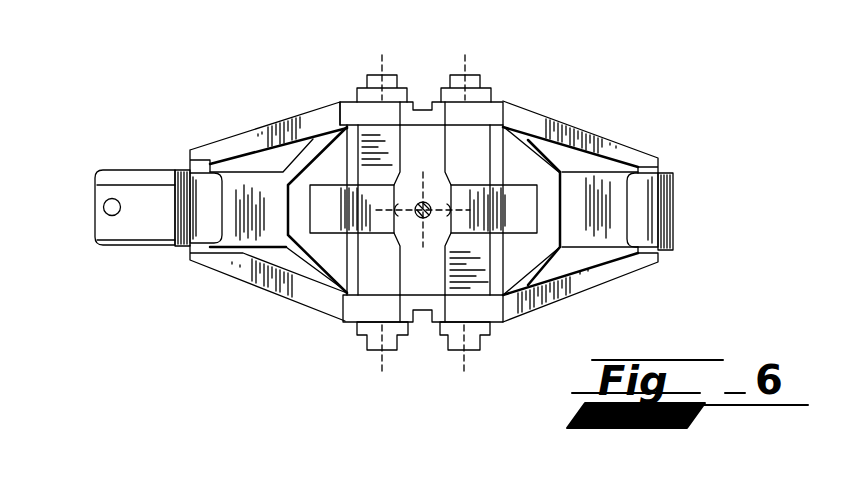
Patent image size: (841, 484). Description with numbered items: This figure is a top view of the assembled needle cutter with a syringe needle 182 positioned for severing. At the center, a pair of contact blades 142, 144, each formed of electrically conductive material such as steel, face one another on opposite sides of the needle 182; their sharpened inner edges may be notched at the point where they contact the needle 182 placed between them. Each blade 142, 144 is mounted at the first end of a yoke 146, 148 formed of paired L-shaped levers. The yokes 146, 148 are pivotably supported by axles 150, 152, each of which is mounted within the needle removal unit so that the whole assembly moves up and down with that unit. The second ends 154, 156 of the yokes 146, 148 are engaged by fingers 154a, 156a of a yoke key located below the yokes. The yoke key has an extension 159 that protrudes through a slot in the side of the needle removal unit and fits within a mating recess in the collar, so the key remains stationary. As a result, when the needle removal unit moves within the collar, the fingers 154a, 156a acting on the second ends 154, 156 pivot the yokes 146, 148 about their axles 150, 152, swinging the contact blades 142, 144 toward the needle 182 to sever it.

The contact blade 142 is at (329, 180).
The contact blade 144 is at (470, 187).
The yoke 146 is at (282, 296).
The yoke 148 is at (578, 293).
The axle 150 is at (370, 353).
The axle 152 is at (470, 352).
The second end of yoke 154 is at (245, 123).
The finger of yoke key 154a is at (208, 226).
The second end of yoke 156 is at (617, 137).
The finger of yoke key 156a is at (650, 207).
The extension of yoke key 159 is at (117, 170).
The needle 182 is at (424, 202).